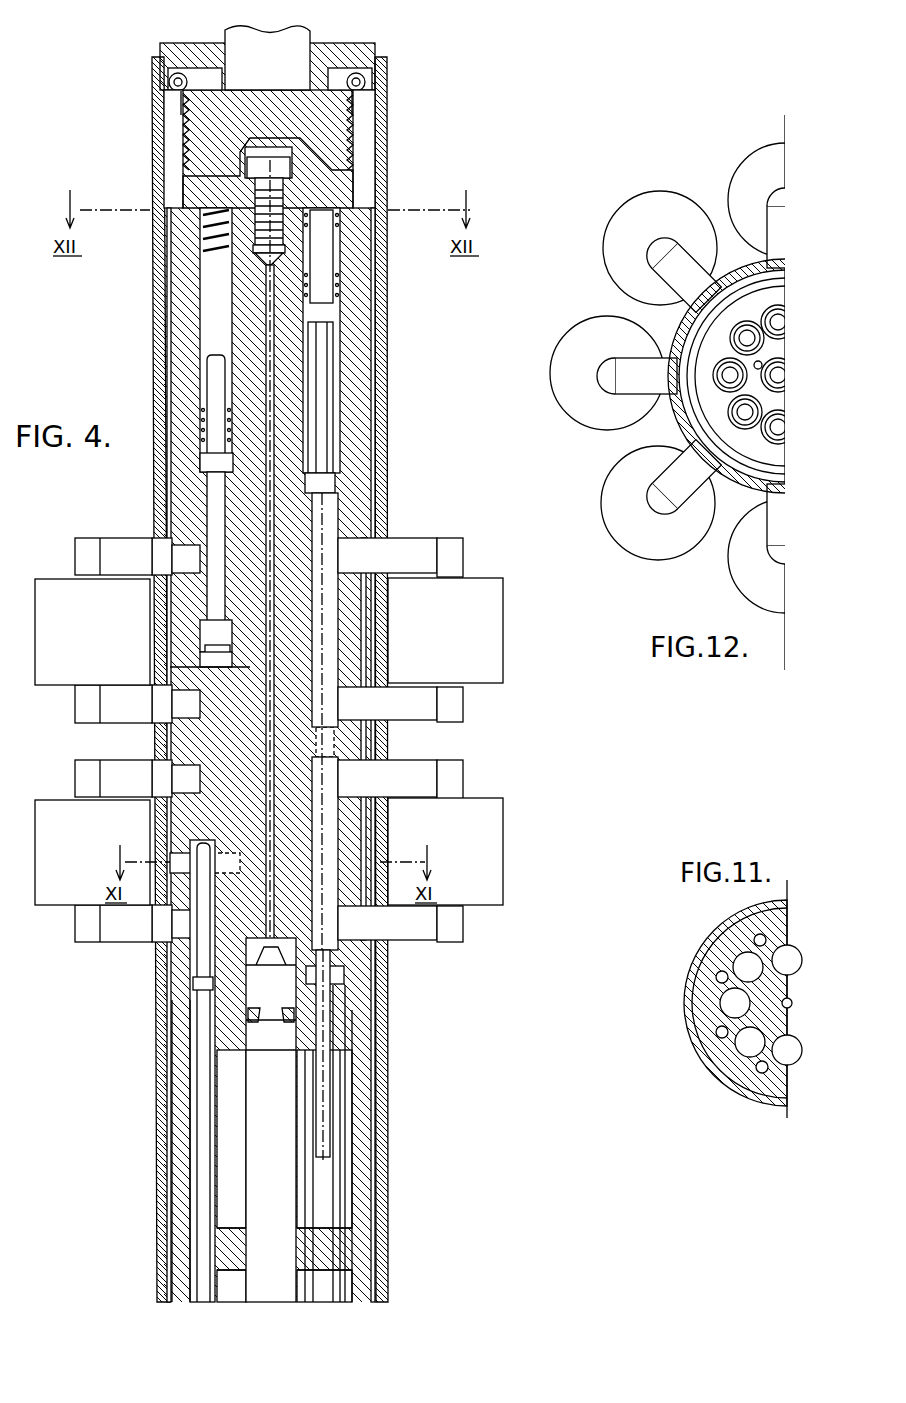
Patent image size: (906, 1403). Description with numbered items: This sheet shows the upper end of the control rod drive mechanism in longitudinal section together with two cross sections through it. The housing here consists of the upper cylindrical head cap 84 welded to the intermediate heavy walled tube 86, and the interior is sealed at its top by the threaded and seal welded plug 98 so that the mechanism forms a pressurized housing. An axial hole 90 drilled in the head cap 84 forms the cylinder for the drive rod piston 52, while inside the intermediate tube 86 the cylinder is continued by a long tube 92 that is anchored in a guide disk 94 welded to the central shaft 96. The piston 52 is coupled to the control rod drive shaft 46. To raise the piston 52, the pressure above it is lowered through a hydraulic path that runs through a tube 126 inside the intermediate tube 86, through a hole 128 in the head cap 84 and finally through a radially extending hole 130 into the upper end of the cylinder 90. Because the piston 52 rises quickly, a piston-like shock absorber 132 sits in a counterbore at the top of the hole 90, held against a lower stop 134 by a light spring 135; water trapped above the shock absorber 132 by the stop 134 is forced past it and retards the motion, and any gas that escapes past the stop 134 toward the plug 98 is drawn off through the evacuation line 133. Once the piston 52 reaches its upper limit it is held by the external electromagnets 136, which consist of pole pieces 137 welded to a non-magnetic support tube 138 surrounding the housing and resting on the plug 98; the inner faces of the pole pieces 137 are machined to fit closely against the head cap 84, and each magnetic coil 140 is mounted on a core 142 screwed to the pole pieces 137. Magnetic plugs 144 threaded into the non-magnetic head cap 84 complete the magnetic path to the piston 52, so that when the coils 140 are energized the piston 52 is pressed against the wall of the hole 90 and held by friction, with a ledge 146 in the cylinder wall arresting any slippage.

In FIG. 4, the control rod drive shaft 46 is at (335, 1000).
In FIG. 4, the drive rod piston 52 is at (330, 525).
In FIG. 4, the head cap 84 is at (362, 397).
In FIG. 11, the head cap 84 is at (762, 1098).
In FIG. 4, the intermediate heavy walled tube 86 is at (363, 1080).
In FIG. 4, the axial hole 90 is at (205, 667).
In FIG. 11, the axial hole 90 is at (722, 1005).
In FIG. 4, the long tube 92 is at (343, 1135).
In FIG. 4, the guide disk 94 is at (348, 1250).
In FIG. 4, the central shaft 96 is at (258, 1122).
In FIG. 4, the plug 98 is at (275, 88).
In FIG. 4, the tube 126 is at (186, 1090).
In FIG. 4, the hole 128 is at (203, 962).
In FIG. 11, the hole 128 is at (735, 1068).
In FIG. 4, the radially extending hole 130 is at (178, 862).
In FIG. 11, the radially extending hole 130 is at (700, 975).
In FIG. 4, the shock absorber 132 is at (338, 483).
In FIG. 4, the evacuation line 133 is at (262, 325).
In FIG. 11, the evacuation line 133 is at (790, 1006).
In FIG. 4, the stop 134 is at (345, 195).
In FIG. 4, the spring 135 is at (218, 246).
In FIG. 4, the electromagnet 136 is at (512, 756).
In FIG. 12, the electromagnet 136 is at (600, 309).
In FIG. 4, the pole piece 137 is at (415, 555).
In FIG. 12, the pole piece 137 is at (770, 242).
In FIG. 4, the non-magnetic support tube 138 is at (380, 345).
In FIG. 4, the magnetic coil 140 is at (495, 640).
In FIG. 12, the magnetic coil 140 is at (730, 190).
In FIG. 4, the core 142 is at (462, 556).
In FIG. 12, the core 142 is at (598, 374).
In FIG. 4, the plug 144 is at (352, 602).
In FIG. 4, the ledge 146 is at (345, 973).